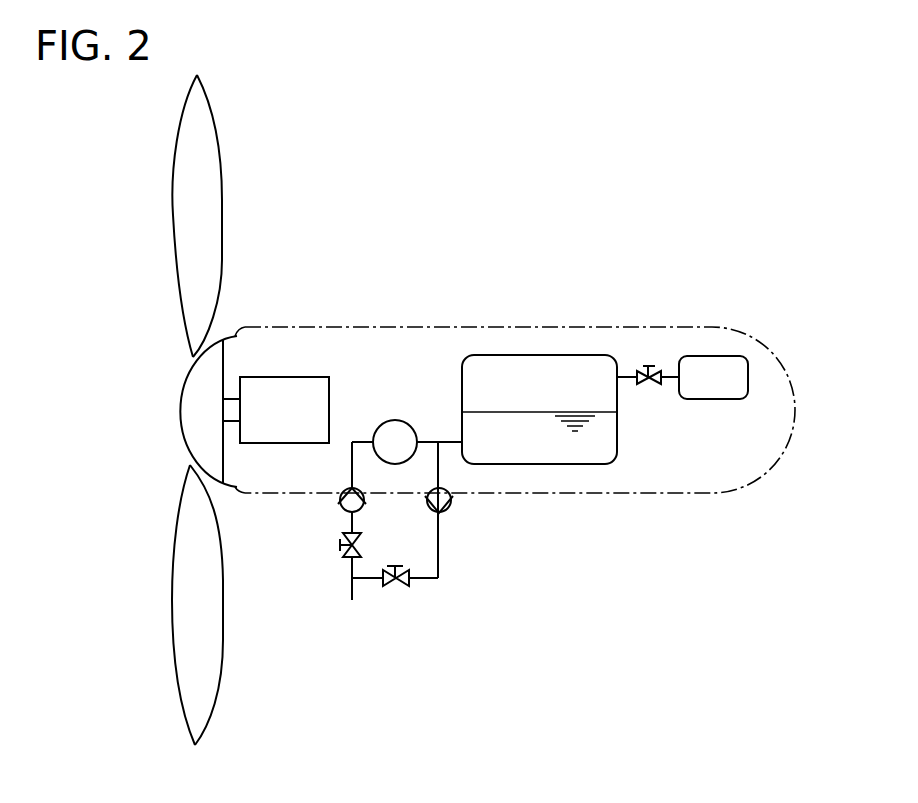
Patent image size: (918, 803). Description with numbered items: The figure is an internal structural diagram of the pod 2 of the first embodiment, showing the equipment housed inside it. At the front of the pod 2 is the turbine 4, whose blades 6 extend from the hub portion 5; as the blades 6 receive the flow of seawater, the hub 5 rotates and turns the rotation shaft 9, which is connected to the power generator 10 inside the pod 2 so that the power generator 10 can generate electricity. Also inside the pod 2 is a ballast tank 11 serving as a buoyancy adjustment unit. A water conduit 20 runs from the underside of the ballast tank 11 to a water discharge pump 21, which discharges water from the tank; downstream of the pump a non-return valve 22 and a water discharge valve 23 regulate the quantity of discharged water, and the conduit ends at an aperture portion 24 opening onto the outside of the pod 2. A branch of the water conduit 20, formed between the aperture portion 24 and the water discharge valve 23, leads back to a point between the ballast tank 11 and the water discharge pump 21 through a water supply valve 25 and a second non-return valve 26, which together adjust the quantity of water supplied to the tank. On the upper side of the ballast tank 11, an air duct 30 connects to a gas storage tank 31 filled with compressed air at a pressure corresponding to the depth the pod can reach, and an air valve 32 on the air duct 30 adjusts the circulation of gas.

The pod 2 is at (447, 325).
The turbine 4 is at (137, 420).
The hub portion 5 is at (190, 388).
The blades 6 is at (180, 197).
The rotation shaft 9 is at (232, 408).
The power generator 10 is at (290, 385).
The ballast tank 11 is at (503, 355).
The water conduit 20 is at (440, 560).
The water discharge pump 21 is at (395, 420).
The non-return valve 22 is at (340, 503).
The water discharge valve 23 is at (338, 545).
The aperture portion 24 is at (350, 588).
The water supply valve 25 is at (400, 588).
The non-return valve 26 is at (455, 505).
The air duct 30 is at (670, 377).
The gas storage tank 31 is at (715, 365).
The air valve 32 is at (648, 368).